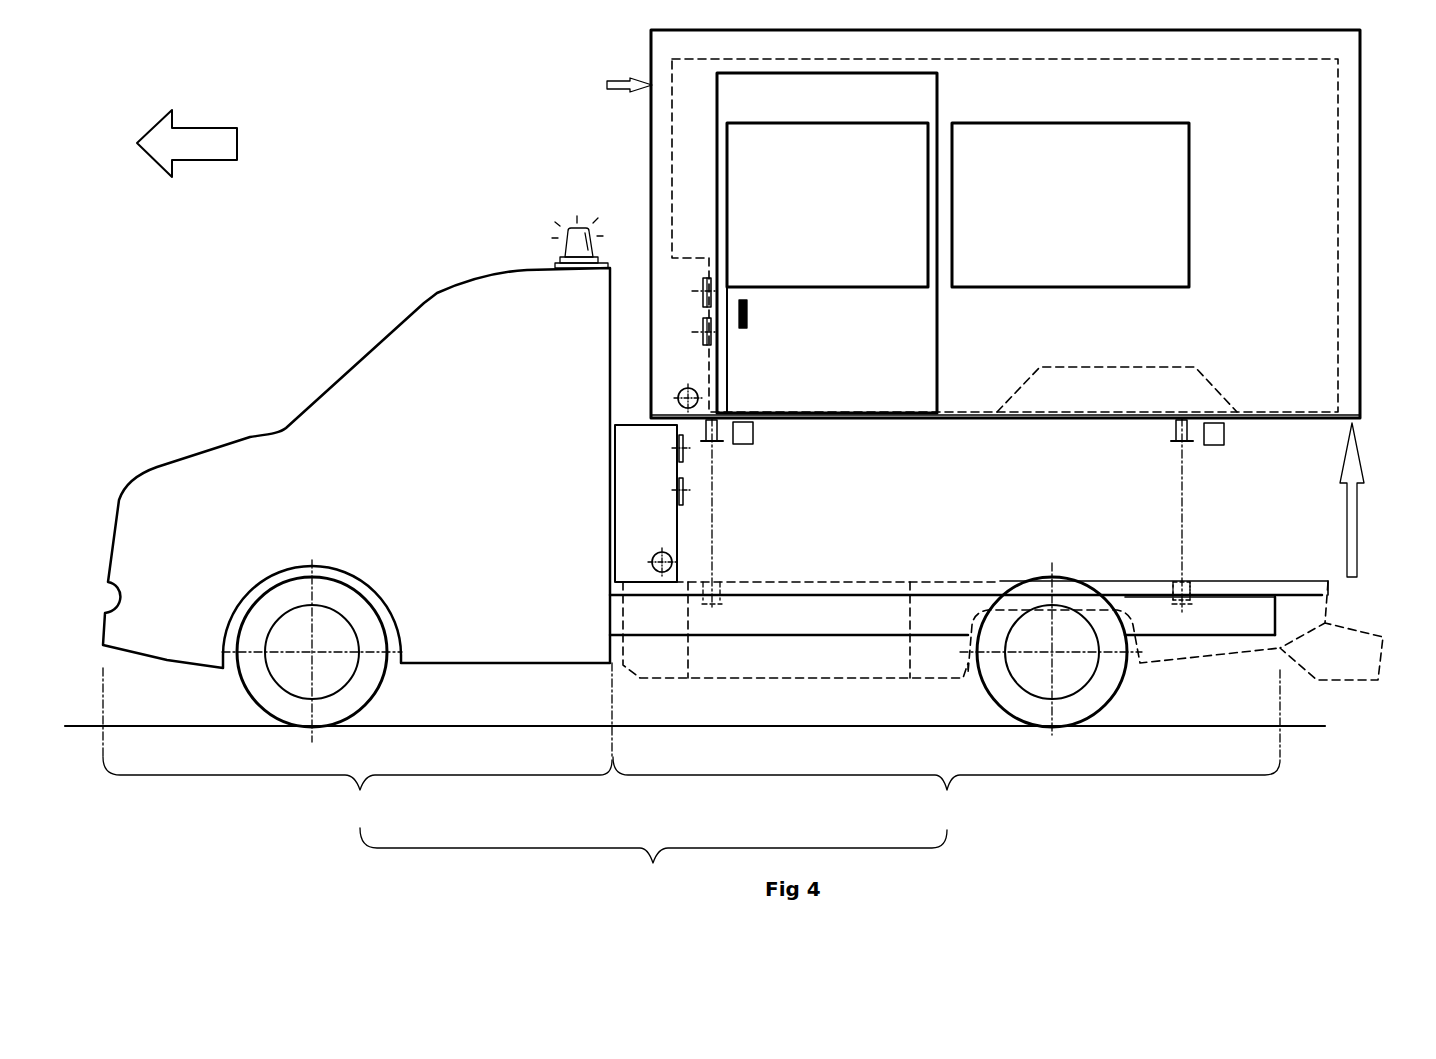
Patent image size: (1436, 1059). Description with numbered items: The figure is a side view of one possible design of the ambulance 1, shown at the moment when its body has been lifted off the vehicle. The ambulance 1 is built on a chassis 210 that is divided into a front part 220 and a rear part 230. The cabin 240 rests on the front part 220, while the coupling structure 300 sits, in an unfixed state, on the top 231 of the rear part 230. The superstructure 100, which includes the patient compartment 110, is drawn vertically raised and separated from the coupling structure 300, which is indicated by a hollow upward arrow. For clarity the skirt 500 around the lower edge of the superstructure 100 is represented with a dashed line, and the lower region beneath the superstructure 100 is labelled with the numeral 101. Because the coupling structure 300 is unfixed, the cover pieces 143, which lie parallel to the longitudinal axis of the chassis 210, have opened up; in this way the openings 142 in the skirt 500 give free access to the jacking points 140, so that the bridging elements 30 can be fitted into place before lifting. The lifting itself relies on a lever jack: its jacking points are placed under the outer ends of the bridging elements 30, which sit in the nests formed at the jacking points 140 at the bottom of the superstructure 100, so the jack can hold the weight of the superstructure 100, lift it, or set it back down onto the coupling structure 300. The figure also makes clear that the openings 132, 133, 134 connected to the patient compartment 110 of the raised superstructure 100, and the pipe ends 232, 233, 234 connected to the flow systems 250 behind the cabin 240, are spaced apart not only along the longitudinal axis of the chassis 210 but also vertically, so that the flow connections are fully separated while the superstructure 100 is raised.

The ambulance 1 is at (548, 111).
The superstructure 100 is at (1360, 166).
The patient compartment 110 is at (1338, 290).
The box body floor 101 is at (960, 421).
The opening 132 is at (711, 289).
The opening 133 is at (712, 331).
The opening 134 is at (717, 397).
The jacking point 140 is at (722, 430).
The cover piece 143 is at (753, 437).
The bridging element 30 is at (707, 443).
The opening 142 is at (715, 605).
The top of the rear part 231 is at (1245, 595).
The coupling structure 300 is at (1178, 582).
The skirt 500 is at (857, 682).
The cabin 240 is at (365, 352).
The flow systems 250 is at (630, 440).
The pipe end 232 is at (677, 449).
The pipe end 233 is at (677, 490).
The pipe end 234 is at (652, 562).
The front part of the chassis 220 is at (357, 790).
The rear part of the chassis 230 is at (946, 791).
The chassis 210 is at (653, 858).